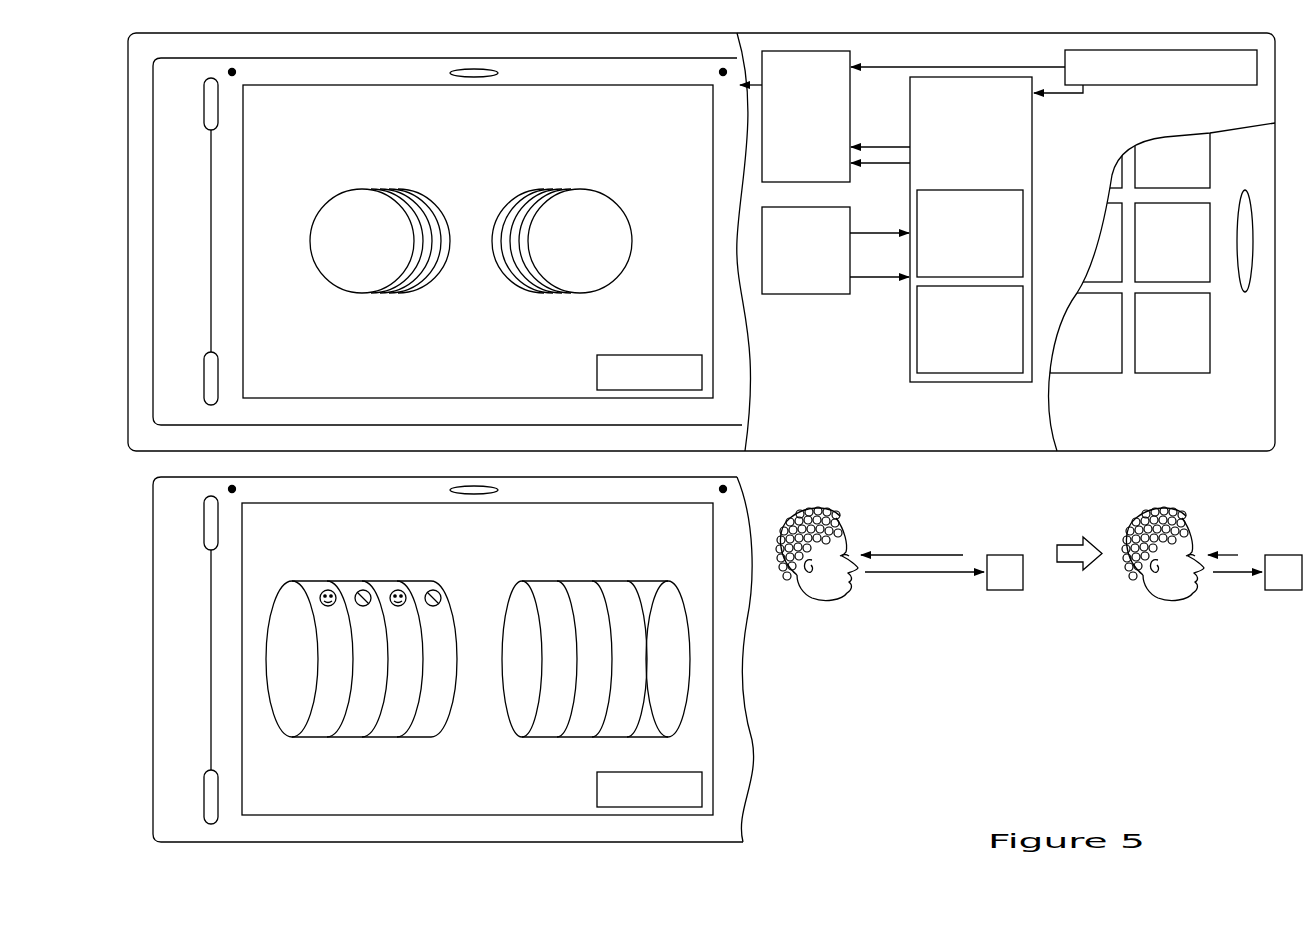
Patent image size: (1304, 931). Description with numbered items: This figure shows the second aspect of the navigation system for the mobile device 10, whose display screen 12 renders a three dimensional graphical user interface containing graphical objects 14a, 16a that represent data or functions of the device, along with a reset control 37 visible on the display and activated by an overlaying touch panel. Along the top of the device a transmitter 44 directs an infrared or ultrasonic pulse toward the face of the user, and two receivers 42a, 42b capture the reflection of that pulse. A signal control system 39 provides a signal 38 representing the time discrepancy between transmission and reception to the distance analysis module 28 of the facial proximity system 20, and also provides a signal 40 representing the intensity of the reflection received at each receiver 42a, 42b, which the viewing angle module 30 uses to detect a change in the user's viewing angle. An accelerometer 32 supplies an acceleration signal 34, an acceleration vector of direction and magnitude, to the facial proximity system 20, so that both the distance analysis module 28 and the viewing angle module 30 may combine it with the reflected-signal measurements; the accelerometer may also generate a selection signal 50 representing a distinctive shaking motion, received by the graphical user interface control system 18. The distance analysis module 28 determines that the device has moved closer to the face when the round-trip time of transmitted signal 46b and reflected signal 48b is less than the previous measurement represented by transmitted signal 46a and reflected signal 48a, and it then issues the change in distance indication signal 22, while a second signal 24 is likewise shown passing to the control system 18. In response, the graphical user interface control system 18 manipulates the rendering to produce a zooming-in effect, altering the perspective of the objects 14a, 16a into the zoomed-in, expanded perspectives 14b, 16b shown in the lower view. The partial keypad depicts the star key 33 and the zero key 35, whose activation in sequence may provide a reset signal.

The mobile device 10 is at (129, 85).
The display screen 12 is at (713, 282).
The graphical object 14a is at (346, 278).
The graphical object in zoomed-in perspective 14b is at (320, 581).
The graphical object 16a is at (564, 278).
The graphical object in zoomed-in perspective 16b is at (583, 581).
The graphical user interface control system 18 is at (795, 170).
The facial proximity system 20 is at (960, 183).
The change in distance indication signal 22 is at (899, 146).
The viewing angle signal to GUI control 24 is at (897, 166).
The distance analysis module 28 is at (959, 273).
The viewing angle module 30 is at (959, 366).
The accelerometer 32 is at (1250, 81).
The "*" key 33 is at (1212, 366).
The acceleration signal 34 is at (1047, 96).
The "0" key 35 is at (1212, 206).
The reset control 37 is at (693, 384).
The time discrepancy signal 38 is at (893, 236).
The signal control system 39 is at (795, 291).
The reflected signal intensity signal 40 is at (893, 280).
The receiver 42a is at (235, 71).
The receiver 42b is at (720, 72).
The transmitter 44 is at (498, 73).
The transmitted signal 46a is at (881, 552).
The transmitted signal 46b is at (1222, 552).
The reflected signal 48a is at (958, 575).
The reflected signal 48b is at (1236, 575).
The selection signal 50 is at (866, 69).